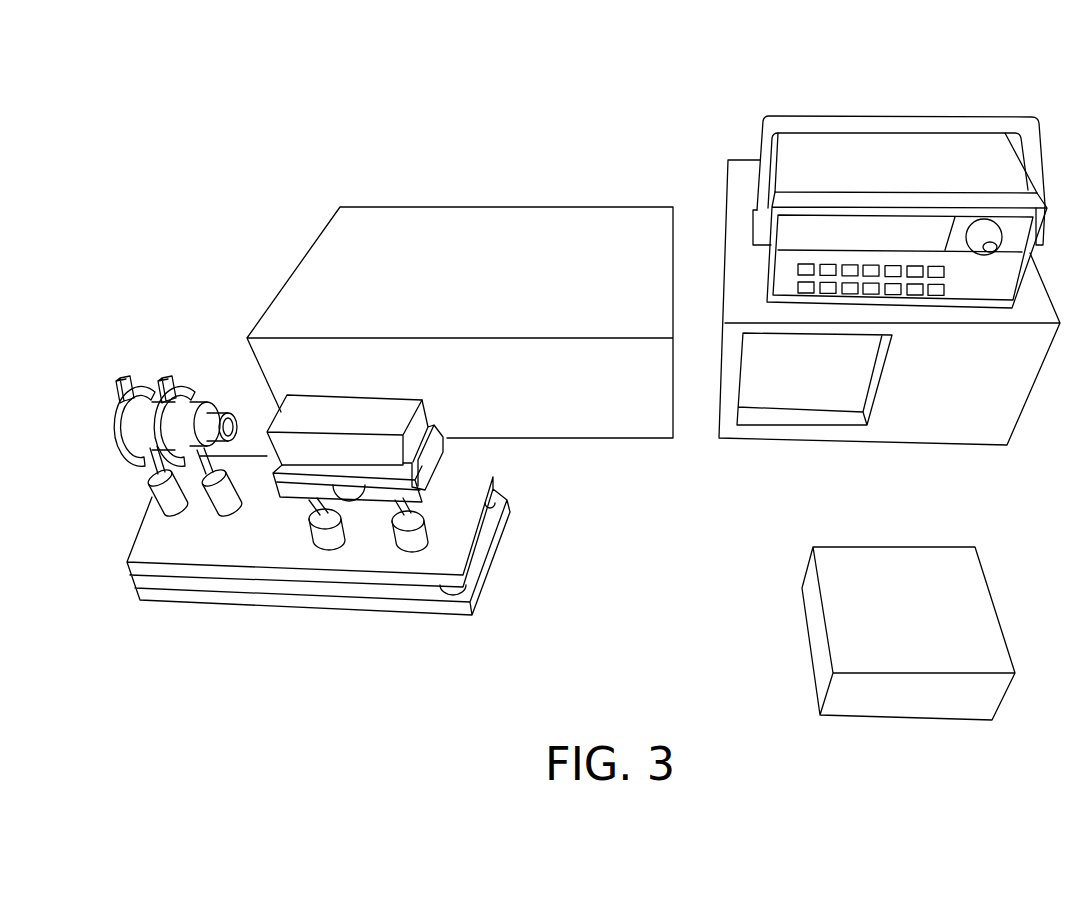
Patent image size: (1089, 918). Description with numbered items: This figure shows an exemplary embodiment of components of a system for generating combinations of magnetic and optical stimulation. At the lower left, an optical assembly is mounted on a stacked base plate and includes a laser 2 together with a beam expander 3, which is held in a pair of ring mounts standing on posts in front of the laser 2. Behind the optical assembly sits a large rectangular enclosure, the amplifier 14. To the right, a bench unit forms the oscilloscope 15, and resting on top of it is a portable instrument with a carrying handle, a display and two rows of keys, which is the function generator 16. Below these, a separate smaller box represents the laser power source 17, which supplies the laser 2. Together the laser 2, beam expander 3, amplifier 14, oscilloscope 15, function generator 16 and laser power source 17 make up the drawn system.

The laser 2 is at (363, 515).
The beam expander 3 is at (196, 487).
The amplifier 14 is at (530, 280).
The oscilloscope 15 is at (926, 387).
The function generator 16 is at (910, 178).
The laser power source 17 is at (917, 629).